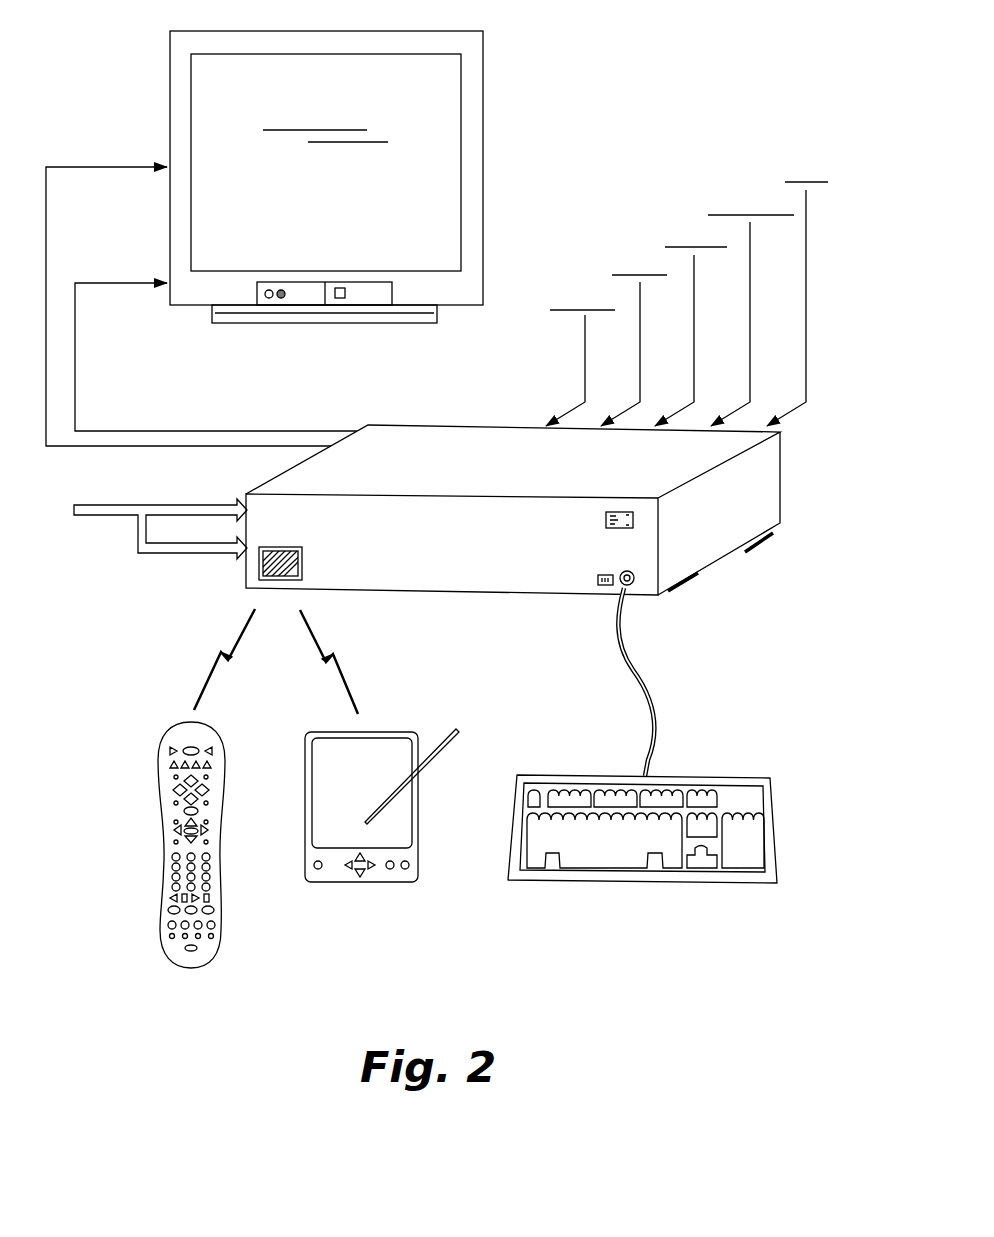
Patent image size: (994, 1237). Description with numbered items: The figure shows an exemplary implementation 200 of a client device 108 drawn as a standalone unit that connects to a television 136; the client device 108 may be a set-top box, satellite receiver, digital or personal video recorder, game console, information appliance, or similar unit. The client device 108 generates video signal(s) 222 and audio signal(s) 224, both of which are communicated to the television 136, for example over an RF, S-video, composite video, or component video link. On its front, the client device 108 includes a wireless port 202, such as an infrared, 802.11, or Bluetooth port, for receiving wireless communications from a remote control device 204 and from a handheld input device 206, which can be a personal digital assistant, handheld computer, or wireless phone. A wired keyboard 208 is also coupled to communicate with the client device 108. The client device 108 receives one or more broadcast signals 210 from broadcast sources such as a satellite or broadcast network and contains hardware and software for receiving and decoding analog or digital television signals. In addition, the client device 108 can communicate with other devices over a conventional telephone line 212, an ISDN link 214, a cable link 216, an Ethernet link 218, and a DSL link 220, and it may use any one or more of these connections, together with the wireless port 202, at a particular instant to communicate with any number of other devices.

The exemplary implementation 200 is at (596, 64).
The television 136 is at (434, 261).
The video signal(s) 222 is at (133, 200).
The audio signal(s) 224 is at (133, 319).
The client device 108 is at (429, 425).
The wireless port 202 is at (295, 547).
The broadcast signal(s) 210 is at (122, 516).
The telephone line 212 is at (585, 273).
The ISDN link 214 is at (641, 240).
The cable link 216 is at (696, 210).
The Ethernet link 218 is at (752, 175).
The DSL link 220 is at (806, 145).
The remote control device 204 is at (158, 745).
The handheld input device 206 is at (378, 732).
The wired keyboard 208 is at (690, 775).